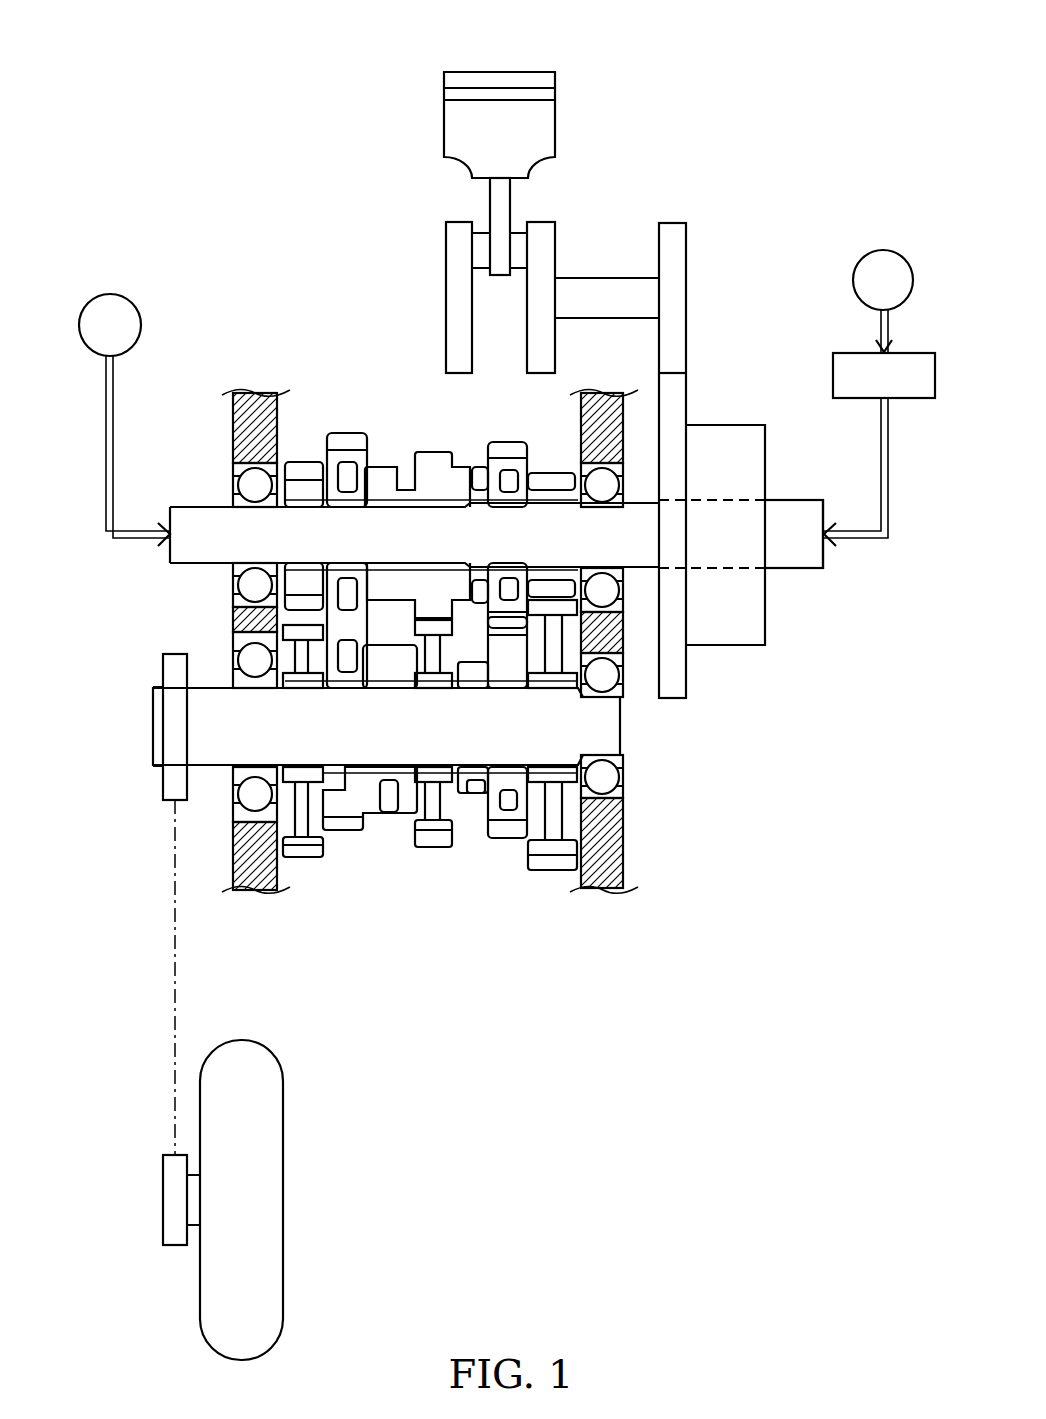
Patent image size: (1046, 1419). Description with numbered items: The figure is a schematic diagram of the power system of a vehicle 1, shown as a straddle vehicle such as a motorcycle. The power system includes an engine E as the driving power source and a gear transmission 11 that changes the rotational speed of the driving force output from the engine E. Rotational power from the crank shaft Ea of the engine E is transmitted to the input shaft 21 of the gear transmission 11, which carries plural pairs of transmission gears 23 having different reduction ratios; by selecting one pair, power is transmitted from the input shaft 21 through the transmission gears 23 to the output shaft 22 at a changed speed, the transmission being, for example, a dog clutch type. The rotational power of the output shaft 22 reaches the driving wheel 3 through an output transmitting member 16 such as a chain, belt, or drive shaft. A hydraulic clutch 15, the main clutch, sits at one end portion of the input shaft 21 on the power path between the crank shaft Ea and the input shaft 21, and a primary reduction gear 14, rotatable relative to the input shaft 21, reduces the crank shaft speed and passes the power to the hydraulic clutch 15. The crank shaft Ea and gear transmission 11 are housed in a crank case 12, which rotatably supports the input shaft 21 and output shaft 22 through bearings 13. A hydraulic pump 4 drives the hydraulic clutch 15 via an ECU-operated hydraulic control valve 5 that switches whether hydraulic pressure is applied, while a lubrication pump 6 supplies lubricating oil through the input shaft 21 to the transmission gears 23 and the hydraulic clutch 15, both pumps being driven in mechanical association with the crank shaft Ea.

The vehicle 1 is at (255, 115).
The engine E is at (607, 97).
The crank shaft Ea is at (601, 288).
The hydraulic pump 4 is at (886, 250).
The hydraulic control valve 5 is at (833, 372).
The lubrication pump 6 is at (110, 295).
The gear transmission 11 is at (442, 595).
The crank case 12 is at (625, 850).
The bearings 13 is at (233, 632).
The primary reduction gear 14 is at (676, 690).
The hydraulic clutch 15 is at (755, 461).
The output transmitting member 16 is at (175, 978).
The input shaft 21 is at (198, 507).
The output shaft 22 is at (200, 720).
The transmission gears 23 is at (349, 425).
The driving wheel 3 is at (283, 1200).